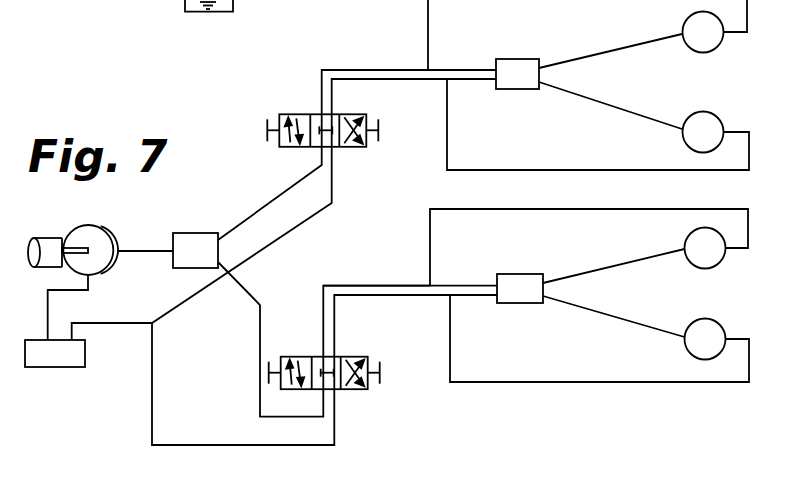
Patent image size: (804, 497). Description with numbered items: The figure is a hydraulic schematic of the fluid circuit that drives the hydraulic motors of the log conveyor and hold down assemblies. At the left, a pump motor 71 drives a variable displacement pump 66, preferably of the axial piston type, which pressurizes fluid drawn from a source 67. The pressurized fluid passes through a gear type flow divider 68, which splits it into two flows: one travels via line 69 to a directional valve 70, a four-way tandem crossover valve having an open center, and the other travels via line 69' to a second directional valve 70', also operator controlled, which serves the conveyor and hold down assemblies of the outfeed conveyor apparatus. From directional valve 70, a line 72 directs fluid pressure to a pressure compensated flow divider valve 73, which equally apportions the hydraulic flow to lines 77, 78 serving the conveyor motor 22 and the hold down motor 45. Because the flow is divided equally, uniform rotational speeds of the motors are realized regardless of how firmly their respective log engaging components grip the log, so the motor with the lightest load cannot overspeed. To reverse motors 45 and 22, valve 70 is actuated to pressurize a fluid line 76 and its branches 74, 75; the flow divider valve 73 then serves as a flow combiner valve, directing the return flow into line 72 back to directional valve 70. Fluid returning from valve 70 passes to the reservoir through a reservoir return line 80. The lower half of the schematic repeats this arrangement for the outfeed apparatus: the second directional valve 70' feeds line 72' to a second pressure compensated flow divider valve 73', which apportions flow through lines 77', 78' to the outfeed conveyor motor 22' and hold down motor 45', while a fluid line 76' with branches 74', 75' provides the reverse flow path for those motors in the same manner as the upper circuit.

The conveyor motor 22 is at (703, 132).
The conveyor motor 22' is at (705, 339).
The hold down motor 45 is at (703, 32).
The hold down motor 45' is at (705, 248).
The variable displacement pump 66 is at (100, 241).
The source 67 is at (55, 353).
The gear type flow divider 68 is at (188, 233).
The line 69 is at (357, 155).
The line 69' is at (355, 339).
The directional valve 70 is at (322, 142).
The second directional valve 70' is at (324, 386).
The pump motor 71 is at (48, 266).
The line 72 is at (375, 53).
The line 72' is at (376, 269).
The pressure compensated flow divider valve 73 is at (516, 58).
The pressure compensated flow divider valve 73' is at (520, 278).
The branch 74 is at (587, 35).
The branch 74' is at (589, 247).
The branch 75 is at (598, 124).
The branch 75' is at (599, 338).
The fluid line 76 is at (389, 92).
The fluid line 76' is at (392, 307).
The line 77 is at (610, 109).
The line 77' is at (614, 320).
The line 78 is at (610, 55).
The line 78' is at (614, 271).
The reservoir return line 80 is at (107, 323).